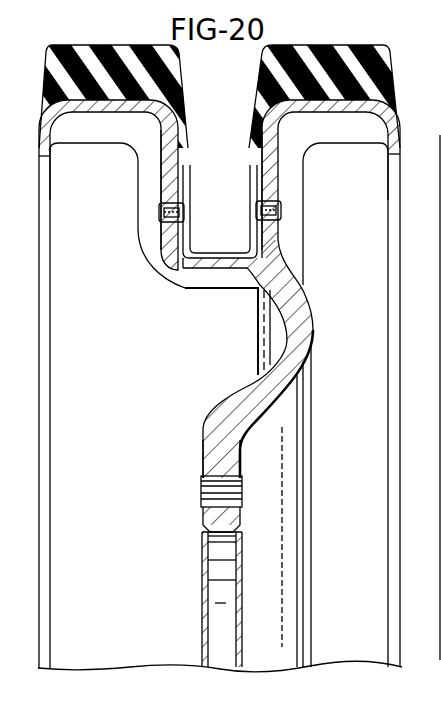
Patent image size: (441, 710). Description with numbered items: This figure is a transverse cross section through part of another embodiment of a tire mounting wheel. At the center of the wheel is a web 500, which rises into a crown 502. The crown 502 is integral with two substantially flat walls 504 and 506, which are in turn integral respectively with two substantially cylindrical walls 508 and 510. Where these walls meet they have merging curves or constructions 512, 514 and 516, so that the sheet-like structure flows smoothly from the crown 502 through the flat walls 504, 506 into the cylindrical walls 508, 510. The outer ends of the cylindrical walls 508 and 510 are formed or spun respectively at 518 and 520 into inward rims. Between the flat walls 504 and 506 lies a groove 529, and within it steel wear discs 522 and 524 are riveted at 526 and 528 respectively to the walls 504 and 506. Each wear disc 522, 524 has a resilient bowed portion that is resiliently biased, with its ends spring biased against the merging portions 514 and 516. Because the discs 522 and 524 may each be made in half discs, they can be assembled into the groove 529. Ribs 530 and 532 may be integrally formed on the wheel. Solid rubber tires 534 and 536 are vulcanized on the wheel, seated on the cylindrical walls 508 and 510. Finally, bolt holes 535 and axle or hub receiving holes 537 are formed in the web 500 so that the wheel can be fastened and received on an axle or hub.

The web 500 is at (212, 455).
The crown 502 is at (305, 322).
The substantially flat wall 504 is at (276, 198).
The substantially flat wall 506 is at (168, 178).
The substantially cylindrical wall 508 is at (326, 118).
The substantially cylindrical wall 510 is at (91, 114).
The merging curve 512 is at (190, 290).
The merging curve 514 is at (300, 148).
The merging curve 516 is at (154, 116).
The inward rim 518 is at (393, 146).
The inward rim 520 is at (56, 146).
The steel wear disc 522 is at (250, 166).
The steel wear disc 524 is at (182, 200).
The rivet 526 is at (244, 226).
The rivet 528 is at (182, 213).
The groove 529 is at (210, 143).
The rib 530 is at (290, 238).
The rib 532 is at (148, 232).
The solid rubber tire 534 is at (389, 27).
The bolt hole 535 is at (213, 492).
The solid rubber tire 536 is at (45, 77).
The axle or hub receiving hole 537 is at (213, 555).